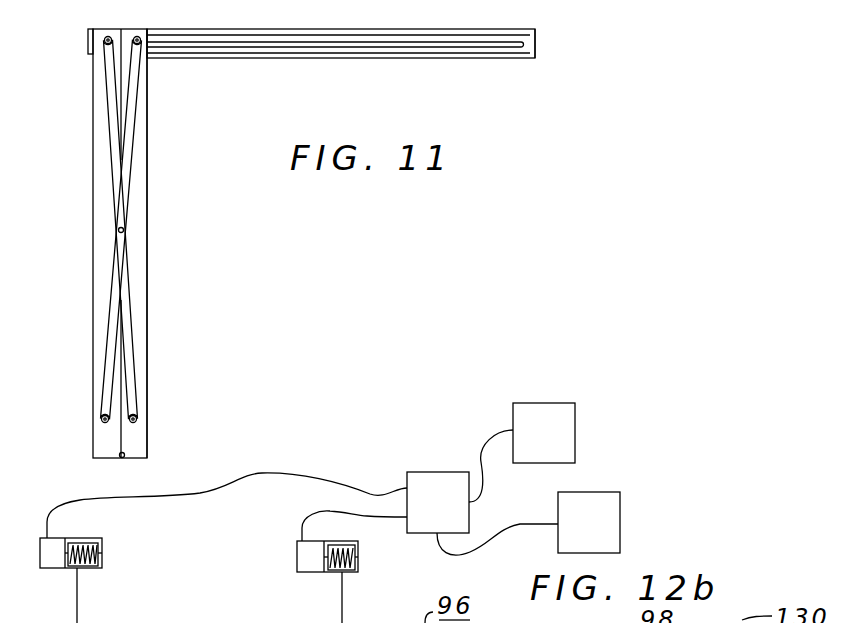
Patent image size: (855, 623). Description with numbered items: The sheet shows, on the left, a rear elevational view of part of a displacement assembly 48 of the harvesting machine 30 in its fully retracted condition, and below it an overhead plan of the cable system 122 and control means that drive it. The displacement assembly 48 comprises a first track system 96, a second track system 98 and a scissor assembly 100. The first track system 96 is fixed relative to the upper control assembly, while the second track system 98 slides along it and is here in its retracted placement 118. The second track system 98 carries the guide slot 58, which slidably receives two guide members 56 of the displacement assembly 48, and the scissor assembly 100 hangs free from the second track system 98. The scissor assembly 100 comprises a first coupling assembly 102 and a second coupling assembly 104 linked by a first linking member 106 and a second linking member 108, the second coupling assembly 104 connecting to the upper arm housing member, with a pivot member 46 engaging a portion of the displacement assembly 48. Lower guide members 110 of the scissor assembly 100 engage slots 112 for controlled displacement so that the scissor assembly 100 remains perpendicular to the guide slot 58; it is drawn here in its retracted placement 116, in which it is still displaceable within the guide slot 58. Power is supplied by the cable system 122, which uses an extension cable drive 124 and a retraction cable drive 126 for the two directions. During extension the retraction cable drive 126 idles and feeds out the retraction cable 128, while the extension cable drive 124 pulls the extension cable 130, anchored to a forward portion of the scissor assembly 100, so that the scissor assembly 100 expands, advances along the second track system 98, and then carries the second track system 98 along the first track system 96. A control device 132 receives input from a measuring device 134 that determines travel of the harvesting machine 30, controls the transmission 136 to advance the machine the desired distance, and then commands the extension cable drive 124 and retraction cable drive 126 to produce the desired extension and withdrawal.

In FIG. 11, the harvesting machine 30 is at (746, 92).
In FIG. 11, the pivot member 46 is at (121, 458).
In FIG. 11, the displacement assembly 48 is at (93, 192).
In FIG. 11, the guide member 56 is at (105, 40).
In FIG. 11, the guide slot 58 is at (355, 52).
In FIG. 11, the first track system 96 is at (258, 58).
In FIG. 11, the second track system 98 is at (535, 44).
In FIG. 11, the scissor assembly 100 is at (222, 257).
In FIG. 11, the first coupling assembly 102 is at (112, 250).
In FIG. 11, the second coupling assembly 104 is at (143, 286).
In FIG. 11, the first linking member 106 is at (108, 122).
In FIG. 11, the second linking member 108 is at (137, 110).
In FIG. 11, the lower guide member 110 is at (101, 419).
In FIG. 11, the slot 112 is at (105, 357).
In FIG. 11, the retracted placement 116 is at (147, 186).
In FIG. 11, the retracted placement 118 is at (457, 58).
In FIG. 12b, the cable system 122 is at (714, 392).
In FIG. 12b, the extension cable drive 124 is at (297, 553).
In FIG. 12b, the retraction cable drive 126 is at (102, 556).
In FIG. 12b, the retraction cable 128 is at (76, 597).
In FIG. 12b, the extension cable 130 is at (341, 594).
In FIG. 12b, the control device 132 is at (433, 472).
In FIG. 12b, the measuring device 134 is at (547, 403).
In FIG. 12b, the transmission 136 is at (620, 525).